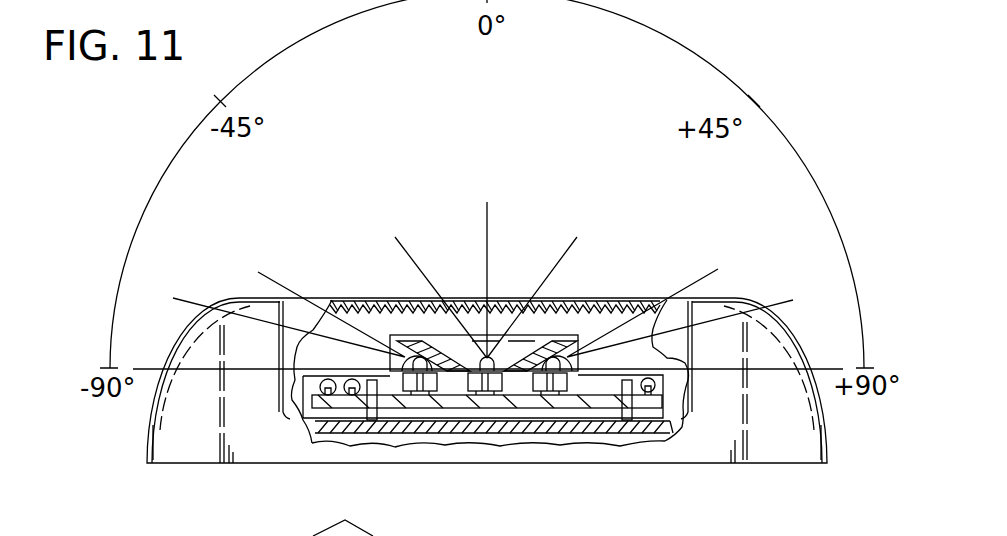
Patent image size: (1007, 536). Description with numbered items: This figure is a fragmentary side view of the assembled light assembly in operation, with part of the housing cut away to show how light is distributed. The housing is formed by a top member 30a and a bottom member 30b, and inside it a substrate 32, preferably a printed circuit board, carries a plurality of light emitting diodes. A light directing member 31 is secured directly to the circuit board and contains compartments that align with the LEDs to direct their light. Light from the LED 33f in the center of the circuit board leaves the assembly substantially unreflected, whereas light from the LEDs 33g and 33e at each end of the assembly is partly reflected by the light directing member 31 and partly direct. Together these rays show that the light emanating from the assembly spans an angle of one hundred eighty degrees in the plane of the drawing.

The top member 30a is at (763, 448).
The bottom member 30b is at (604, 430).
The light directing member 31 is at (556, 334).
The substrate 32 is at (638, 408).
The light emitting diode 33e is at (546, 397).
The light emitting diode 33f is at (493, 397).
The light emitting diode 33g is at (427, 392).